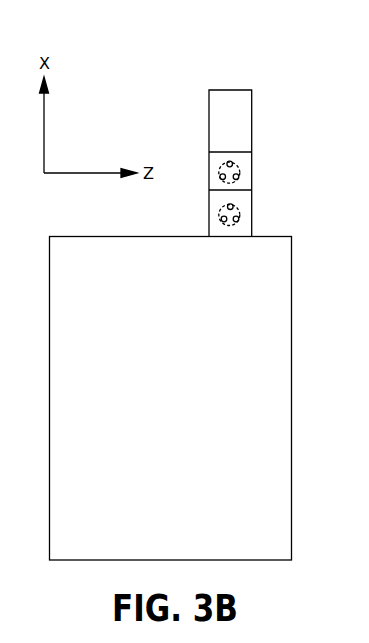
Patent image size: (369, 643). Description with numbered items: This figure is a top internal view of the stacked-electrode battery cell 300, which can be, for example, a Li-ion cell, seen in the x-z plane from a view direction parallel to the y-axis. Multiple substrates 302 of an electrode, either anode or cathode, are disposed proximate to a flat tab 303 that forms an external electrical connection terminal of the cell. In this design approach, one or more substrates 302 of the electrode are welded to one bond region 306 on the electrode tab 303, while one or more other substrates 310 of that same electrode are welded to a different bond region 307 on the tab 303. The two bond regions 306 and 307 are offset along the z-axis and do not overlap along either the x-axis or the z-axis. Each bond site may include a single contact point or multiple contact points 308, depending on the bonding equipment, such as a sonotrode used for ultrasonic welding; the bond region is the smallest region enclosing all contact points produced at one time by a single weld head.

The stacked-electrode battery cell 300 is at (150, 60).
The substrates 302 is at (209, 229).
The flat tab 303 is at (253, 100).
The bond region 306 is at (236, 219).
The bond region 307 is at (236, 177).
The contact points 308 is at (223, 177).
The substrates 310 is at (252, 178).